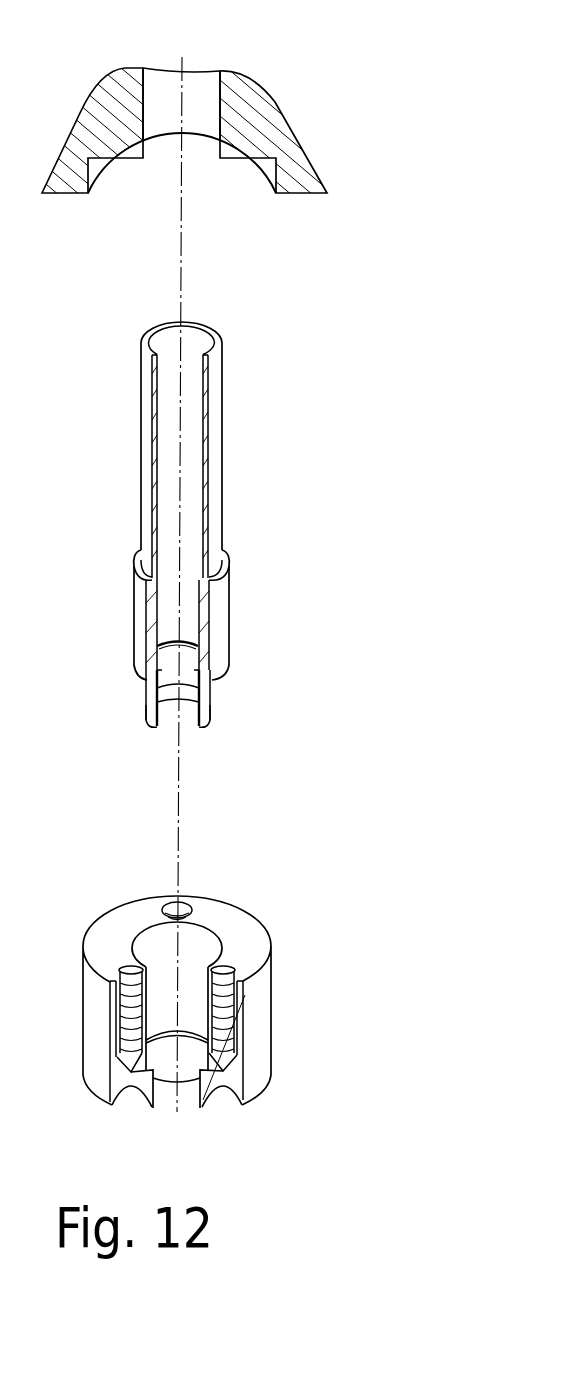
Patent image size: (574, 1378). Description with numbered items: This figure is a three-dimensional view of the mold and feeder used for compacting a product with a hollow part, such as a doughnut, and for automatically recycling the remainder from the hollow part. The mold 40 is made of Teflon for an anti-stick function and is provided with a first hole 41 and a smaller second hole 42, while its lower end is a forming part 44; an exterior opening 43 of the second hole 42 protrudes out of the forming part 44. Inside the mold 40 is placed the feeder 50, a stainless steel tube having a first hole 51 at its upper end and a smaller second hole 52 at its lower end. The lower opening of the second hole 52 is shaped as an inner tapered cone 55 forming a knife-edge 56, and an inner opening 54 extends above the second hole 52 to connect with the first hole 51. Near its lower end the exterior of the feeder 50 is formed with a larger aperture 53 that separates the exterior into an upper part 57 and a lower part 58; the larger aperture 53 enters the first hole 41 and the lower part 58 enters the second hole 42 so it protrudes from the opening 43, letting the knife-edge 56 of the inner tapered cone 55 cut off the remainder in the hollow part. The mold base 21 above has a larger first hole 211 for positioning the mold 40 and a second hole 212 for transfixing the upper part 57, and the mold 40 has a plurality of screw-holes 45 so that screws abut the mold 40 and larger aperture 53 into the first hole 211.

The mold base 21 is at (253, 138).
The first hole 211 is at (215, 172).
The second hole 212 is at (182, 95).
The feeder 50 is at (238, 422).
The first hole 51 is at (192, 463).
The upper part 57 is at (218, 533).
The larger aperture 53 is at (222, 625).
The inner opening 54 is at (162, 640).
The second hole 52 is at (170, 672).
The lower part 58 is at (205, 707).
The knife-edge 56 is at (202, 728).
The inner tapered cone 55 is at (192, 727).
The mold 40 is at (262, 995).
The first hole 41 is at (203, 947).
The second hole 42 is at (183, 1067).
The exterior opening 43 is at (165, 1080).
The forming part 44 is at (233, 1095).
The screw-holes 45 is at (130, 963).